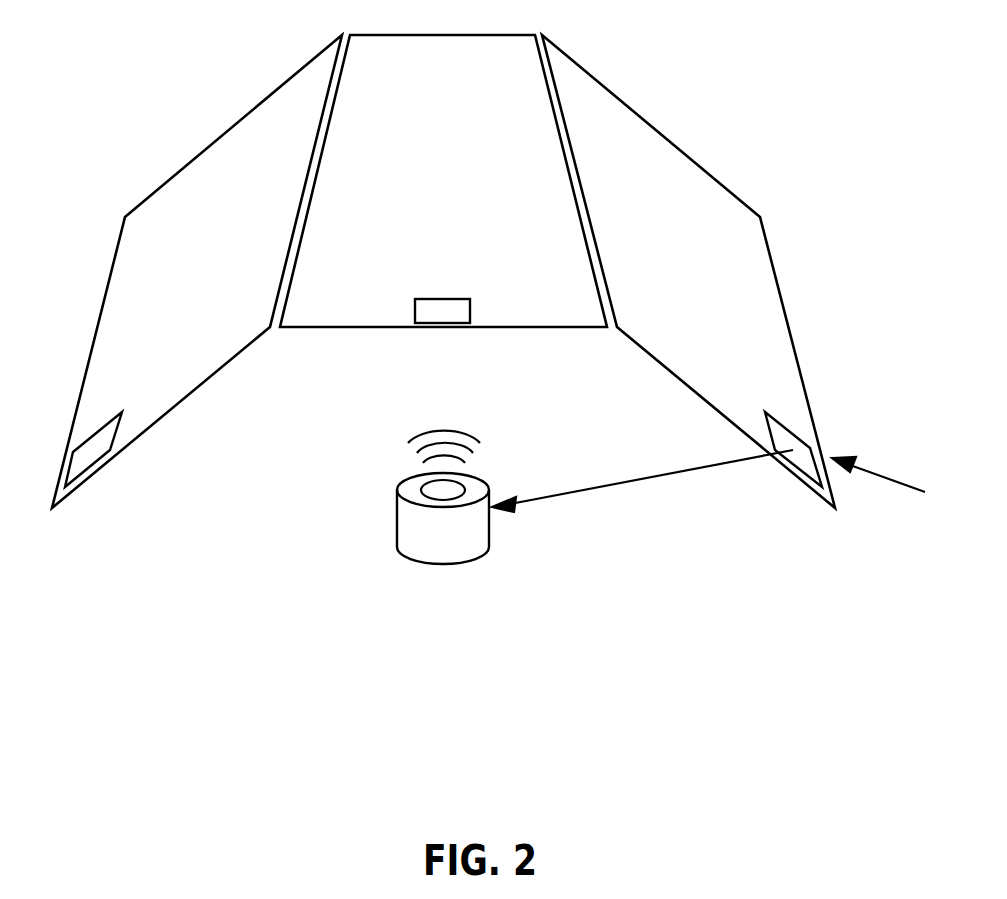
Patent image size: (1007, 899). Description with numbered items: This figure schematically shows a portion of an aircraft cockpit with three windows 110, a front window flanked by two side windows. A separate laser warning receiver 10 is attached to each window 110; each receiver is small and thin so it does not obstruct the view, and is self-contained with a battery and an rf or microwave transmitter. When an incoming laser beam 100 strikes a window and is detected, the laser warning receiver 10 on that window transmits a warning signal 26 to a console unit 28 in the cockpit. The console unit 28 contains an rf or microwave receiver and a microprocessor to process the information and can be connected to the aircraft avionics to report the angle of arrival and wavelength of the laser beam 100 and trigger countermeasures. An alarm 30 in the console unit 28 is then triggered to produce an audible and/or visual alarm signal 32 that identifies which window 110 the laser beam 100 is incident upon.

The window 110 is at (134, 247).
The laser warning receiver 10 is at (102, 418).
The console unit 28 is at (430, 546).
The alarm 30 is at (425, 488).
The alarm signal 32 is at (412, 435).
The warning signal 26 is at (643, 482).
The laser beam 100 is at (873, 473).